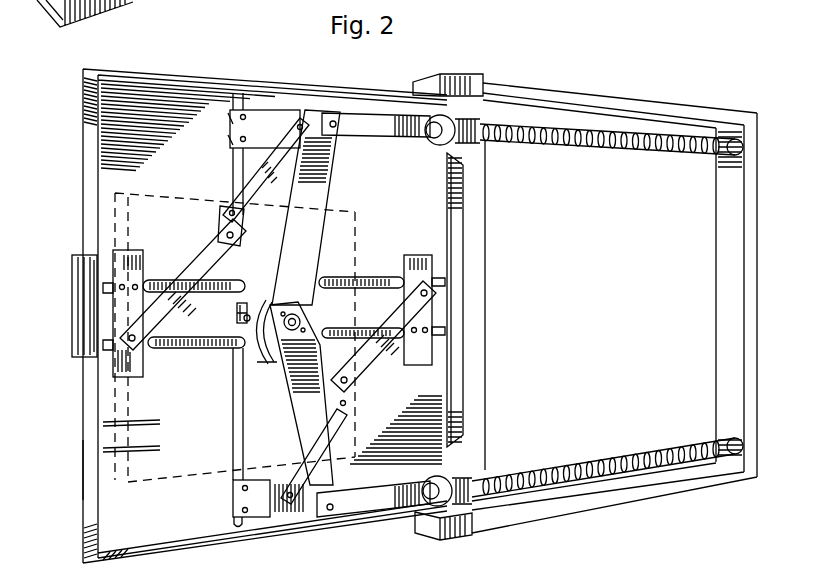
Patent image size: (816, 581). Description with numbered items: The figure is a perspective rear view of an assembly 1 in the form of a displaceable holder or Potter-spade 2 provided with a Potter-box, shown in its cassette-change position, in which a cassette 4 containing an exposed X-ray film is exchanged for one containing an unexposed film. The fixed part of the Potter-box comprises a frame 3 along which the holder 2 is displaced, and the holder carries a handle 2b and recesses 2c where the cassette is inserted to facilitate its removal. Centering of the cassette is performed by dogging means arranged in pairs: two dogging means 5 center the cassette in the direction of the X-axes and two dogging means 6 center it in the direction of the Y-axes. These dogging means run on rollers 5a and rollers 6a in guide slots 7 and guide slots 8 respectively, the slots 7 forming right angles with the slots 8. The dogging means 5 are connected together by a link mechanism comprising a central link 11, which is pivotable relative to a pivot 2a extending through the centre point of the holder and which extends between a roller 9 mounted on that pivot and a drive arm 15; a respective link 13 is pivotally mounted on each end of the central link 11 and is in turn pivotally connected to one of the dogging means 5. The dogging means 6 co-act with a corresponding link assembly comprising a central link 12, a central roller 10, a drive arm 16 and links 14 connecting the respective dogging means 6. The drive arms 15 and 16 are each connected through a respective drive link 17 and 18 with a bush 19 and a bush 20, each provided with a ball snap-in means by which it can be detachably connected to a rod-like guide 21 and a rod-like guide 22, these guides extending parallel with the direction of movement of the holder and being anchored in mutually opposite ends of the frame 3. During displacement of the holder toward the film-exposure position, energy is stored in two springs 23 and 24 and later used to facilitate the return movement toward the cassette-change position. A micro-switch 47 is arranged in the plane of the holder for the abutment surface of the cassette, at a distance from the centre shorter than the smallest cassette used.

The assembly 1 is at (466, 65).
The holder 2 is at (199, 76).
The pivot 2a is at (305, 318).
The handle 2b is at (77, 287).
The recesses 2c is at (88, 442).
The frame 3 is at (659, 91).
The cassette 4 is at (100, 190).
The dogging means 5 is at (117, 258).
The rollers 5a is at (107, 358).
The dogging means 6 is at (251, 108).
The rollers 6a is at (231, 120).
The guide slots 7 is at (193, 345).
The guide slots 8 is at (233, 166).
The roller 9 is at (258, 364).
The central roller 10 is at (246, 355).
The central link 11 is at (237, 300).
The central link 12 is at (222, 207).
The links 13 is at (203, 260).
The links 14 is at (281, 92).
The drive arm 15 is at (307, 414).
The drive arm 16 is at (322, 180).
The drive link 17 is at (362, 506).
The drive link 18 is at (364, 122).
The bush 19 is at (469, 474).
The bush 20 is at (482, 120).
The rod-like guide 21 is at (543, 468).
The rod-like guide 22 is at (561, 154).
The spring 23 is at (606, 452).
The spring 24 is at (620, 155).
The micro-switch 47 is at (237, 315).